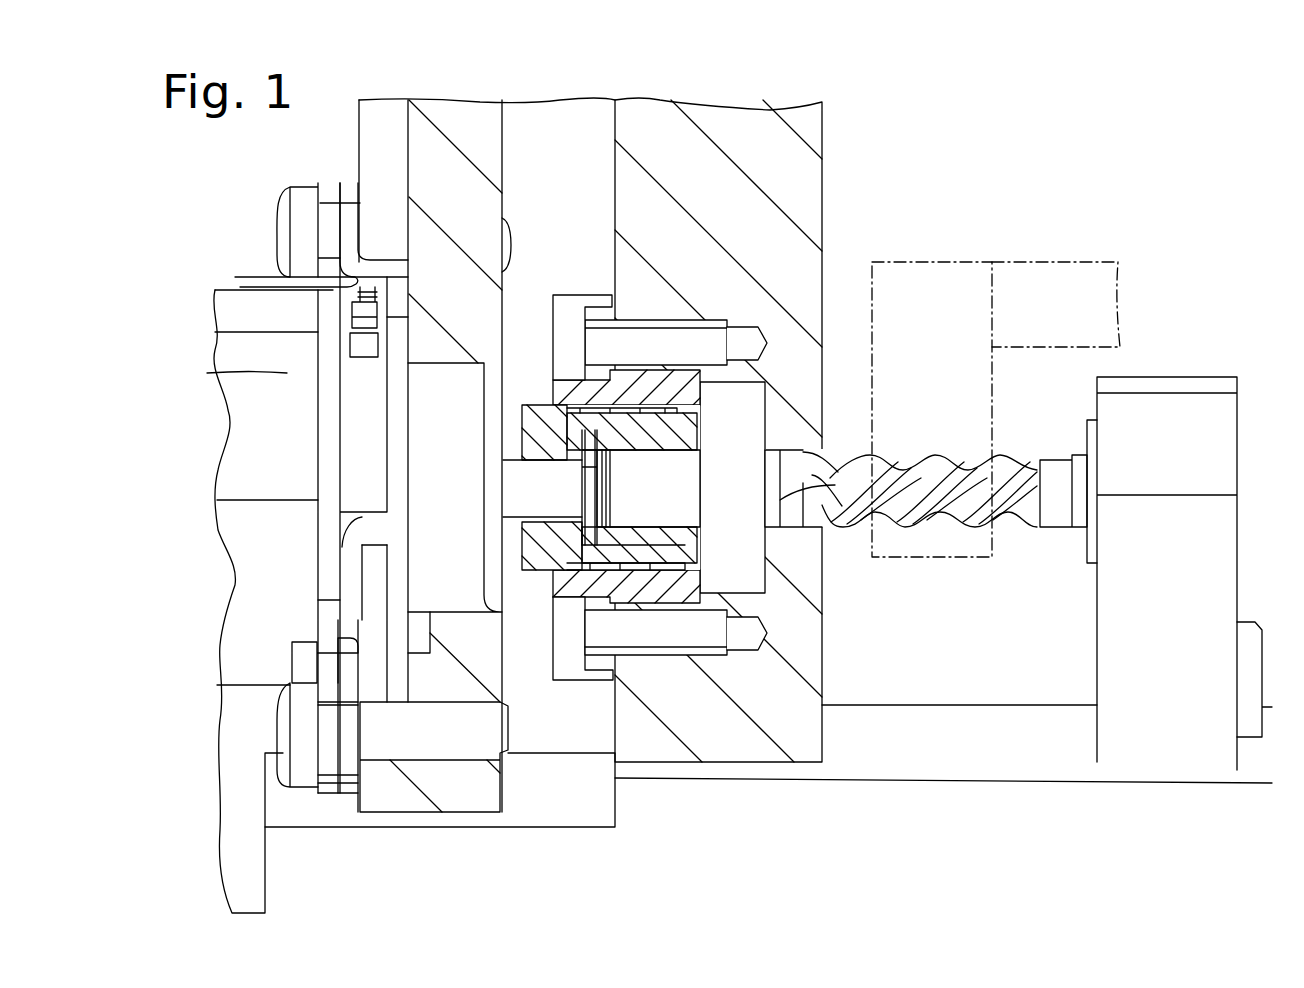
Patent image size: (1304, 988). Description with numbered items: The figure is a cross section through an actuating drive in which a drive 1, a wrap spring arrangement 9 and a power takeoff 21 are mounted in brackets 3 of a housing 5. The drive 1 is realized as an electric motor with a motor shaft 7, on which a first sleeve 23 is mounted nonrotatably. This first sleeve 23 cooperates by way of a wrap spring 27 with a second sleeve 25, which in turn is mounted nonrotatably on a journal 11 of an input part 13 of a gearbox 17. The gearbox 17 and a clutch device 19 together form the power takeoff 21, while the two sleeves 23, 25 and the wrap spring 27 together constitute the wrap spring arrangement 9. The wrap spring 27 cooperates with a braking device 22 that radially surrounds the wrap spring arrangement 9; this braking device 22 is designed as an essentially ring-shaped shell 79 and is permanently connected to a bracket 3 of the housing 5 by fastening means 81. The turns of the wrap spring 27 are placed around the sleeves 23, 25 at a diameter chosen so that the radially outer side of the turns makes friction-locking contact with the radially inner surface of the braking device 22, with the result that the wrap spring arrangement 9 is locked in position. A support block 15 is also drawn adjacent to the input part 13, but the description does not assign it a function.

The drive 1 is at (455, 572).
The brackets 3 is at (673, 179).
The housing 5 is at (770, 157).
The motor shaft 7 is at (545, 498).
The wrap spring arrangement 9 is at (653, 409).
The journal 11 is at (653, 502).
The input part 13 is at (952, 497).
The support block 15 is at (1093, 557).
The gearbox 17 is at (955, 302).
The clutch device 19 is at (1097, 300).
The power takeoff 21 is at (1032, 293).
The braking device 22 is at (693, 582).
The first sleeve 23 is at (545, 432).
The second sleeve 25 is at (650, 537).
The wrap spring 27 is at (605, 610).
The shell 79 is at (603, 312).
The fastening means 81 is at (565, 330).